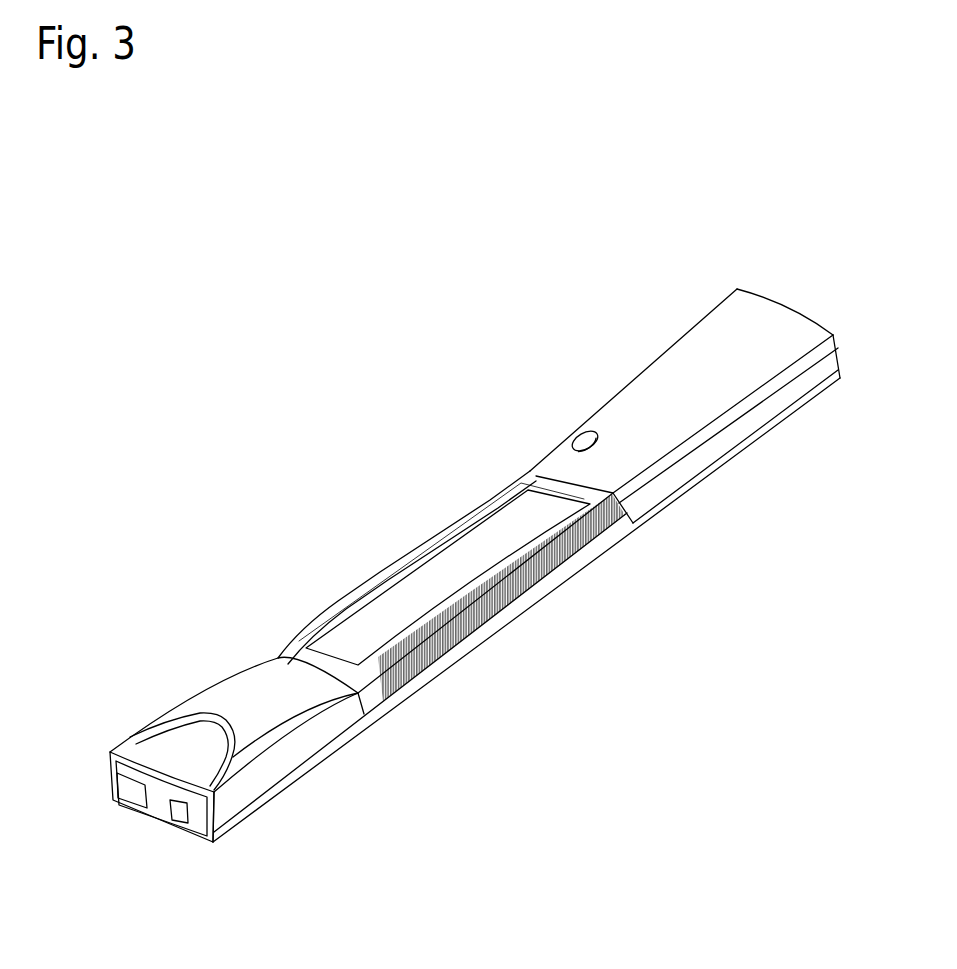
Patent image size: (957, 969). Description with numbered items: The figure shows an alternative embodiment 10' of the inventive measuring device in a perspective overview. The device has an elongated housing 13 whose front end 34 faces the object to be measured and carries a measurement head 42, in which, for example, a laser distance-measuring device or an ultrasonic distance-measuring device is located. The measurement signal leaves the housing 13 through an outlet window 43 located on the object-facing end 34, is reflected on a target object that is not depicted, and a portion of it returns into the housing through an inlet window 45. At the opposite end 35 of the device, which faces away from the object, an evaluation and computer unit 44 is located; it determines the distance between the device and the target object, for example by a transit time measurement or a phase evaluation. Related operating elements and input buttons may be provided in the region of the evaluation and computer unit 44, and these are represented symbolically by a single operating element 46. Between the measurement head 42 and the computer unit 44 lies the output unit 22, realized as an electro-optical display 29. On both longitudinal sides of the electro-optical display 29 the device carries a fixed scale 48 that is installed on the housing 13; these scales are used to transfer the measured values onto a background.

The alternative embodiment of measuring device 10' is at (526, 588).
The housing 13 is at (302, 657).
The output unit 22 is at (494, 708).
The electro-optical display 29 is at (405, 603).
The end of the device facing the object 34 is at (58, 772).
The end of the device facing away from the object 35 is at (789, 280).
The measurement head 42 is at (258, 775).
The outlet window 43 is at (182, 817).
The evaluation and computer unit 44 is at (722, 440).
The inlet window 45 is at (132, 795).
The operating element 46 is at (576, 432).
The fixed scale 48 is at (583, 550).